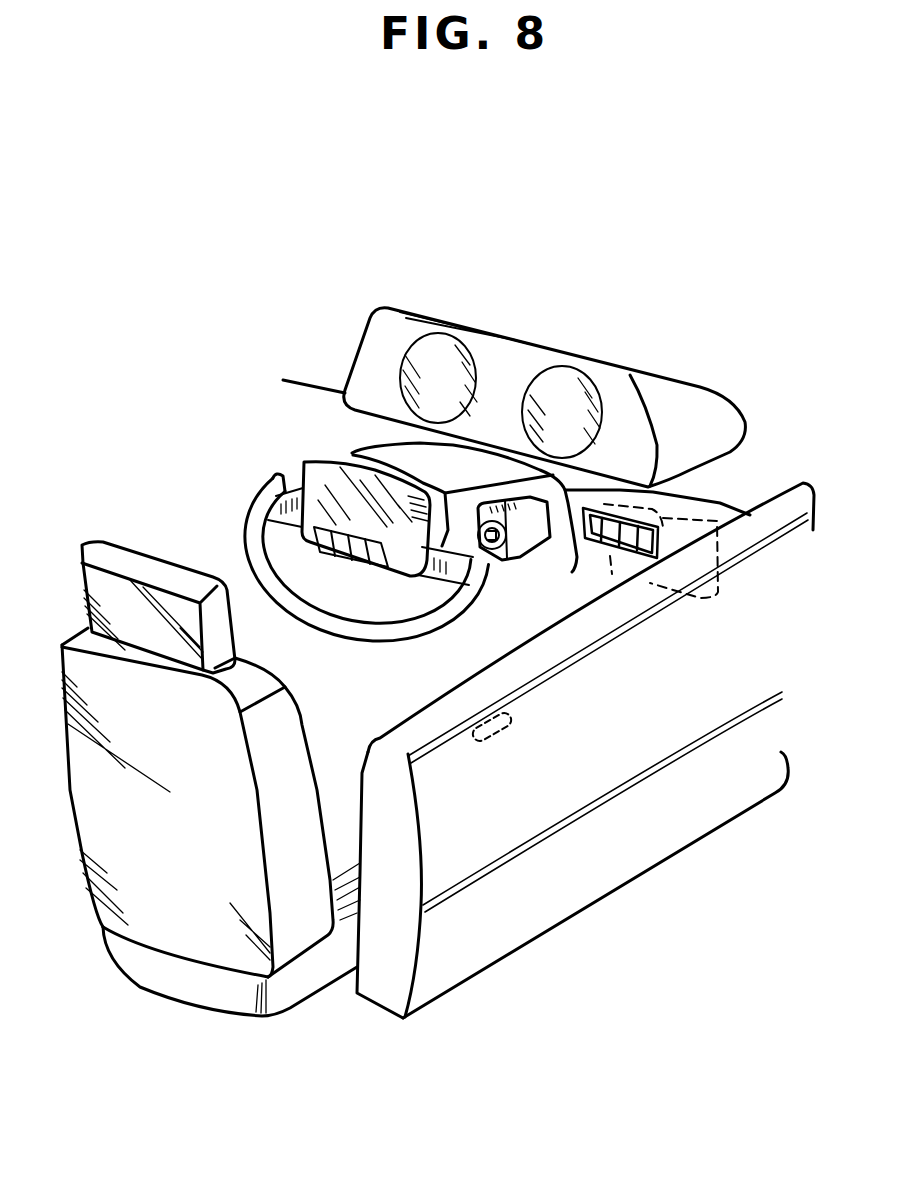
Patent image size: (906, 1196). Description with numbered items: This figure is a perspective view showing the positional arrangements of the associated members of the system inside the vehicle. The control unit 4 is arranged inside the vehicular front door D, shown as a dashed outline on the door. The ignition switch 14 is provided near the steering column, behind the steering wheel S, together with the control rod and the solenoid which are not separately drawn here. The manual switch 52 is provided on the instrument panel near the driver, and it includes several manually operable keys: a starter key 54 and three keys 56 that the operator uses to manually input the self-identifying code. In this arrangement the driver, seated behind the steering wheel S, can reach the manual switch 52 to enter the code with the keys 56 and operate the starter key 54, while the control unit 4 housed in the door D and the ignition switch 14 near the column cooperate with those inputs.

The steering wheel S is at (253, 507).
The starter key 54 is at (340, 562).
The ignition switch 14 is at (517, 550).
The manual switch 52 is at (632, 563).
The keys 56 is at (638, 505).
The control unit 4 is at (483, 718).
The vehicular front door D is at (635, 862).